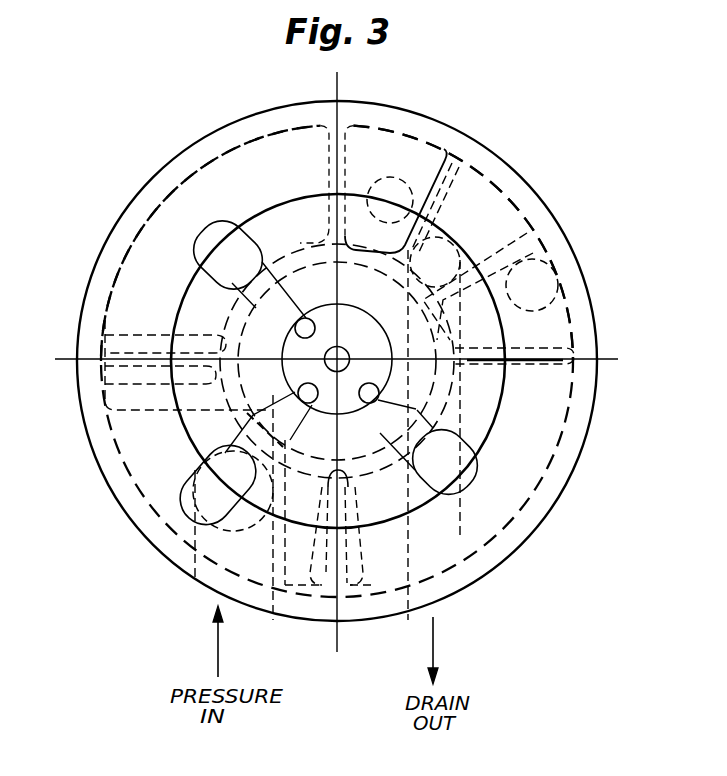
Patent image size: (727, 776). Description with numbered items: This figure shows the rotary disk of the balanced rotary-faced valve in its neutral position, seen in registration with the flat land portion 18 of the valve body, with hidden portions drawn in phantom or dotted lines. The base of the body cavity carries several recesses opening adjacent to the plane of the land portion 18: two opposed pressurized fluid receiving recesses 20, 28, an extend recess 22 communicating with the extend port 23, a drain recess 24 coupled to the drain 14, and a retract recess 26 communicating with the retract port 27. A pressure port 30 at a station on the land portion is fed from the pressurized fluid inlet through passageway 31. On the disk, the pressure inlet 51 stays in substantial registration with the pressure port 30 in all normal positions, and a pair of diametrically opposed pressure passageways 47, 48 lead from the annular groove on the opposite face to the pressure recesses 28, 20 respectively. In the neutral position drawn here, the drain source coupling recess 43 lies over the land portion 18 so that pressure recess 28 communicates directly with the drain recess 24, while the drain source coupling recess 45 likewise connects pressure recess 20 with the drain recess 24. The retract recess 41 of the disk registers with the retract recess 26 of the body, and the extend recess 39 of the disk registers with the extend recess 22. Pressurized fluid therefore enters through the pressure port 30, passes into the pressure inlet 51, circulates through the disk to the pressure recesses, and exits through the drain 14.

The drain 14 is at (403, 275).
The flat land portion 18 is at (580, 450).
The pressurized fluid receiving recess 20 is at (500, 533).
The extend recess 22 is at (545, 350).
The extend port 23 is at (560, 294).
The drain recess 24 is at (520, 206).
The retract recess 26 is at (447, 151).
The retract port 27 is at (398, 176).
The pressurized fluid receiving recess 28 is at (130, 248).
The pressure port 30 is at (175, 472).
The passageway 31 is at (195, 543).
The extend recess of the disk 39 is at (527, 247).
The retract recess of the disk 41 is at (348, 110).
The drain source coupling recess 43 is at (105, 360).
The drain source coupling recess 45 is at (363, 573).
The pressure passageway 47 is at (265, 222).
The pressure passageway 48 is at (477, 478).
The pressure inlet 51 is at (257, 527).